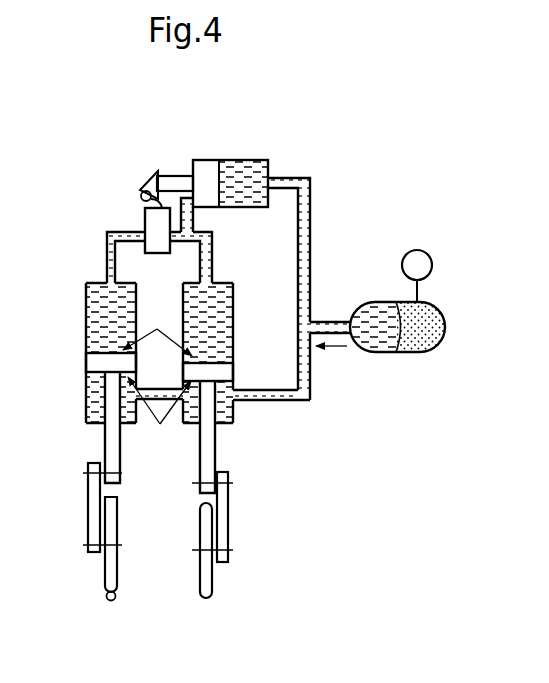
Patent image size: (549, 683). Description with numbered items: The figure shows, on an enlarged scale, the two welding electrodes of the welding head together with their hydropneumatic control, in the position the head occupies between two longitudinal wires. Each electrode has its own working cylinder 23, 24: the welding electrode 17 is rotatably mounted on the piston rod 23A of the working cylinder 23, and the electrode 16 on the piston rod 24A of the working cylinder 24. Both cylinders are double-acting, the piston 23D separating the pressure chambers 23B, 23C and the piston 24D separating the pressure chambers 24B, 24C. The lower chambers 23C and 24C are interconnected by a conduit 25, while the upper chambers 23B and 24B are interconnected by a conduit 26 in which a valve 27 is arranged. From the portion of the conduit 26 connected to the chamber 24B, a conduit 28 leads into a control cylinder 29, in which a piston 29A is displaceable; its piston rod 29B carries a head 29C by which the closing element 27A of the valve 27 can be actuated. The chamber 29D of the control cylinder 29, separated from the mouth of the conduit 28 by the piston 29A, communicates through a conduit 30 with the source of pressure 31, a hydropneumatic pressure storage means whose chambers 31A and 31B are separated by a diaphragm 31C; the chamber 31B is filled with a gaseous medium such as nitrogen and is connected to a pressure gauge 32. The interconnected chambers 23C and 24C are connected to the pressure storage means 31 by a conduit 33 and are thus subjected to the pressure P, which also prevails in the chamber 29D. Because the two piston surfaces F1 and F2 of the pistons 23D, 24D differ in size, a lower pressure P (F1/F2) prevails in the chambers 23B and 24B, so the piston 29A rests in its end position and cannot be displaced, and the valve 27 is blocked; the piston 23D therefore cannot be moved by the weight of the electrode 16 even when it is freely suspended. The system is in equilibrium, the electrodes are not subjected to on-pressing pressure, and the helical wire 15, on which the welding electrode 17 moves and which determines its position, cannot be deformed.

The helical wire 15 is at (111, 601).
The electrode 16 is at (205, 592).
The welding electrode 17 is at (110, 572).
The working cylinder 23 is at (79, 358).
The piston rod 23A is at (110, 443).
The pressure chamber 23B is at (98, 330).
The pressure chamber 23C is at (92, 410).
The piston 23D is at (93, 363).
The working cylinder 24 is at (233, 347).
The piston rod 24A is at (210, 460).
The pressure chamber 24B is at (210, 295).
The pressure chamber 24C is at (220, 407).
The piston 24D is at (220, 373).
The conduit 25 is at (154, 392).
The conduit 26 is at (113, 247).
The valve 27 is at (157, 240).
The closing element 27A is at (147, 205).
The conduit 28 is at (186, 215).
The control cylinder 29 is at (197, 146).
The piston 29A is at (207, 170).
The piston rod 29B is at (176, 183).
The head 29C is at (156, 176).
The chamber 29D is at (252, 168).
The conduit 30 is at (300, 217).
The source of pressure 31 is at (418, 335).
The chamber 31A is at (368, 312).
The chamber 31B is at (437, 323).
The diaphragm 31C is at (407, 340).
The pressure gauge 32 is at (416, 262).
The conduit 33 is at (303, 398).
The piston surface F1 is at (159, 416).
The piston surface F2 is at (157, 331).
The pressure P is at (331, 360).